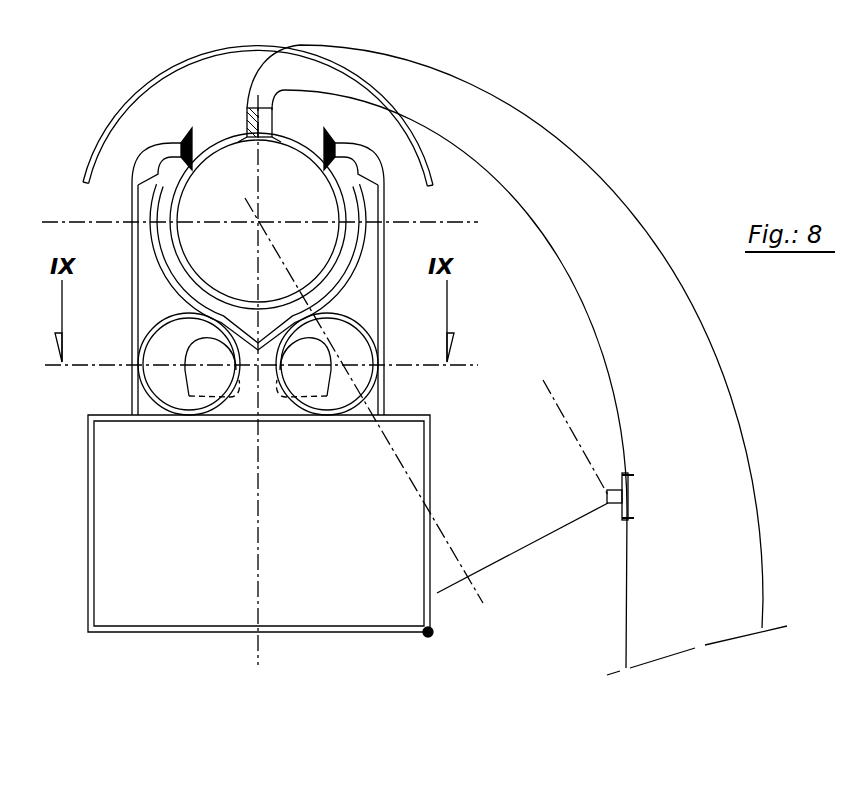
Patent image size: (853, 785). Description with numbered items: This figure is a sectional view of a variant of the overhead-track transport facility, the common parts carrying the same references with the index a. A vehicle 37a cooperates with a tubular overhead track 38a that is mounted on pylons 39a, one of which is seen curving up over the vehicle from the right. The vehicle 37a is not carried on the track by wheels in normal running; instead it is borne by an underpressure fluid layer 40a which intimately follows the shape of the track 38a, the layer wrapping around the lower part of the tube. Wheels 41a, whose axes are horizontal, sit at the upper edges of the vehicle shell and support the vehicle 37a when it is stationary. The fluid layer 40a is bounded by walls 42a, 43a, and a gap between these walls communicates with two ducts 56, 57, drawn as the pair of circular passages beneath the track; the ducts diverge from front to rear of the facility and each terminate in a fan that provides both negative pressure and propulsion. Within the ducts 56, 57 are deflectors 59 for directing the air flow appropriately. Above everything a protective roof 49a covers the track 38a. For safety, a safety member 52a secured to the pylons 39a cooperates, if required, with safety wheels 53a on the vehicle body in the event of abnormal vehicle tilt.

The vehicle 37a is at (107, 517).
The tubular overhead track 38a is at (204, 155).
The pylons 39a is at (513, 107).
The underpressure fluid layer 40a is at (193, 291).
The wheels 41a is at (188, 138).
The wall 42a is at (167, 268).
The wall 43a is at (349, 268).
The protective roof 49a is at (124, 104).
The safety member 52a is at (617, 508).
The safety wheels 53a is at (432, 634).
The duct 56 is at (189, 364).
The duct 57 is at (327, 364).
The deflectors 59 is at (288, 398).